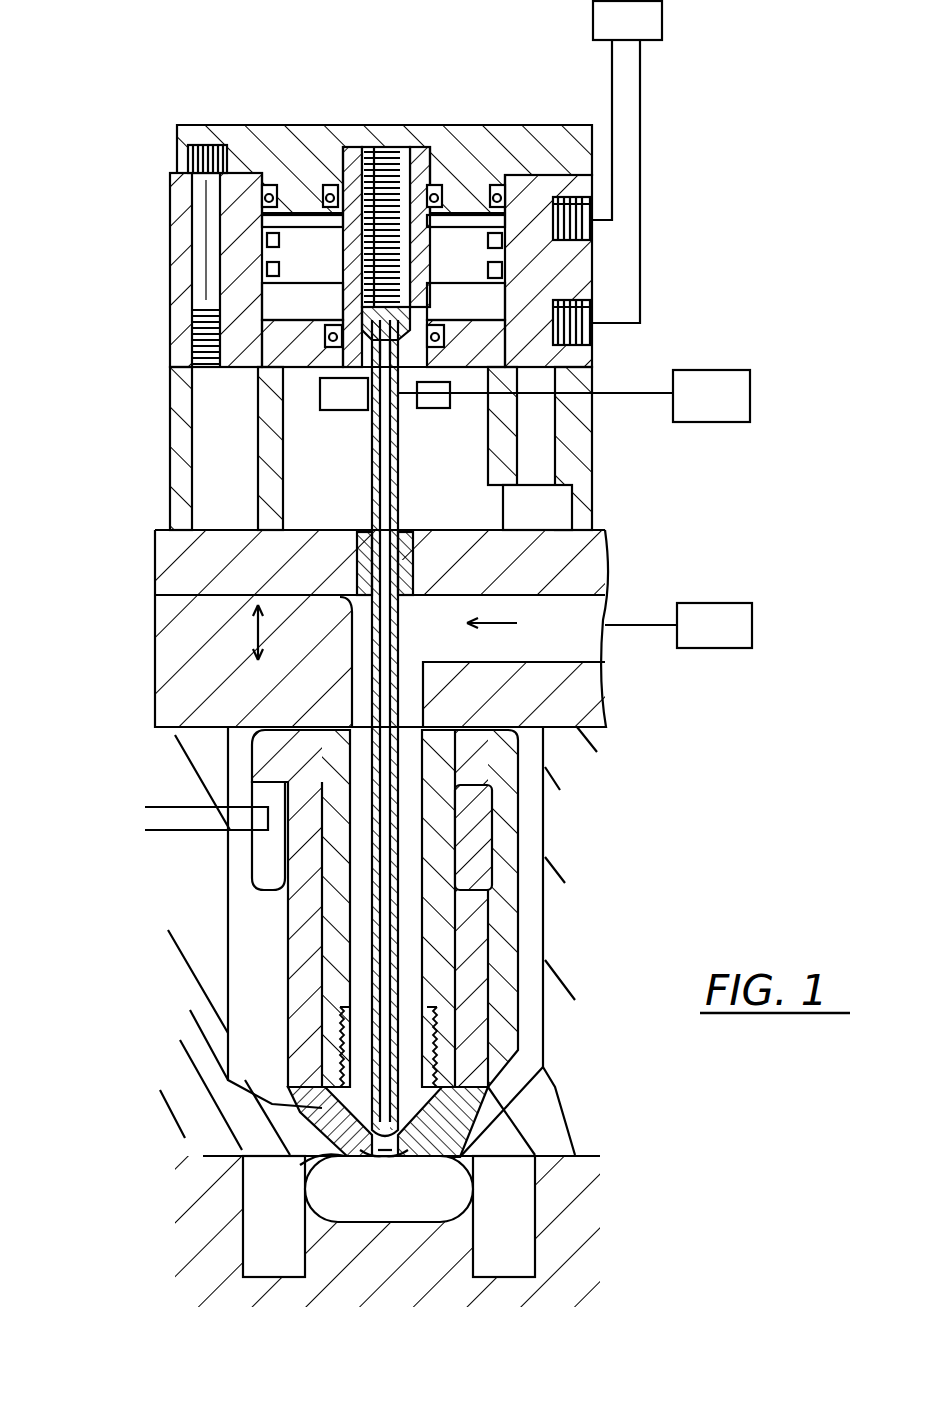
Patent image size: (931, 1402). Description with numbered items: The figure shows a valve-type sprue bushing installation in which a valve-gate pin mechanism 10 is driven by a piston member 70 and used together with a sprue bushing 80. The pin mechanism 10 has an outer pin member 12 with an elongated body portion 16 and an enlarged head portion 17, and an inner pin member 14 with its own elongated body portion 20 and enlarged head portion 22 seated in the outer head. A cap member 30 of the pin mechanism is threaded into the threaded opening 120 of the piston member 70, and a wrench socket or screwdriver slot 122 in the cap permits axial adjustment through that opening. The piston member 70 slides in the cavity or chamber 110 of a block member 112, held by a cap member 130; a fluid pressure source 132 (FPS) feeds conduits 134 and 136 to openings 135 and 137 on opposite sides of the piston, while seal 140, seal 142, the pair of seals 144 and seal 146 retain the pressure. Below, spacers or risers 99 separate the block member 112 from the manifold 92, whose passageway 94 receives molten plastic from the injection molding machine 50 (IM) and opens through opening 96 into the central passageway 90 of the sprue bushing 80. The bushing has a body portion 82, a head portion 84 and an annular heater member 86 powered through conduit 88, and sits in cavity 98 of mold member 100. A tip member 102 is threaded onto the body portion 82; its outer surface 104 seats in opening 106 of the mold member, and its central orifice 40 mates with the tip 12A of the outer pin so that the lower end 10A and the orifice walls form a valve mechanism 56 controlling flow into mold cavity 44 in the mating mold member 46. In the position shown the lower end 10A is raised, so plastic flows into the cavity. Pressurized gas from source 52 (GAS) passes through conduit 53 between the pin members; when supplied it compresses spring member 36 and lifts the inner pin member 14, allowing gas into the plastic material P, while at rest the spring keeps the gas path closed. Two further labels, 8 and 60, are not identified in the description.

The injection molding apparatus 8 is at (140, 906).
The valve-gate pin mechanism 10 is at (349, 496).
The lower end of the pin mechanism 10A is at (340, 1086).
The outer pin member 12 is at (400, 446).
The lower end or tip of the outer pin member 12A is at (470, 1120).
The inner pin member 14 is at (385, 502).
The elongated body portion of the outer pin member 16 is at (398, 922).
The enlarged head portion of the outer pin member 17 is at (410, 322).
The elongated body portion of the inner pin member 20 is at (398, 907).
The enlarged head portion of the inner pin member 22 is at (370, 350).
The cap member 30 is at (350, 317).
The spring member 36 is at (306, 380).
The orifice 40 is at (396, 1162).
The mold cavity 44 is at (522, 1252).
The mating mold member 46 is at (565, 1205).
The injection molding machine 50 is at (752, 610).
The gas source 52 is at (752, 386).
The conduit 53 is at (634, 396).
The valve mechanism 56 is at (362, 1162).
The cavity surface 60 is at (316, 1162).
The piston member 70 is at (267, 258).
The sprue bushing 80 is at (506, 989).
The body portion of the sprue bushing 82 is at (462, 1033).
The head portion of the sprue bushing 84 is at (520, 818).
The annular heater member 86 is at (478, 1065).
The conduit 88 is at (197, 830).
The central passageway 90 is at (350, 955).
The manifold 92 is at (605, 695).
The passageway 94 is at (505, 598).
The opening 96 is at (424, 675).
The cavity 98 is at (236, 1020).
The spacers or risers 99 is at (178, 473).
The mold member 100 is at (556, 1138).
The tip member 102 is at (274, 1104).
The outer surface of the tip member 104 is at (277, 1196).
The opening in the mold member 106 is at (505, 1191).
The cavity or chamber 110 is at (292, 327).
The block member 112 is at (235, 222).
The threaded opening or passageway 120 is at (387, 147).
The wrench socket or screwdriver slot 122 is at (412, 270).
The cap member 130 is at (478, 125).
The fluid pressure source 132 is at (662, 24).
The conduit 134 is at (641, 140).
The opening 135 is at (562, 200).
The conduit 136 is at (645, 298).
The opening 137 is at (590, 340).
The seal 140 is at (269, 185).
The seal 142 is at (330, 185).
The pair of seals 144 is at (505, 262).
The seal 146 is at (445, 338).
The plastic material P is at (372, 1222).